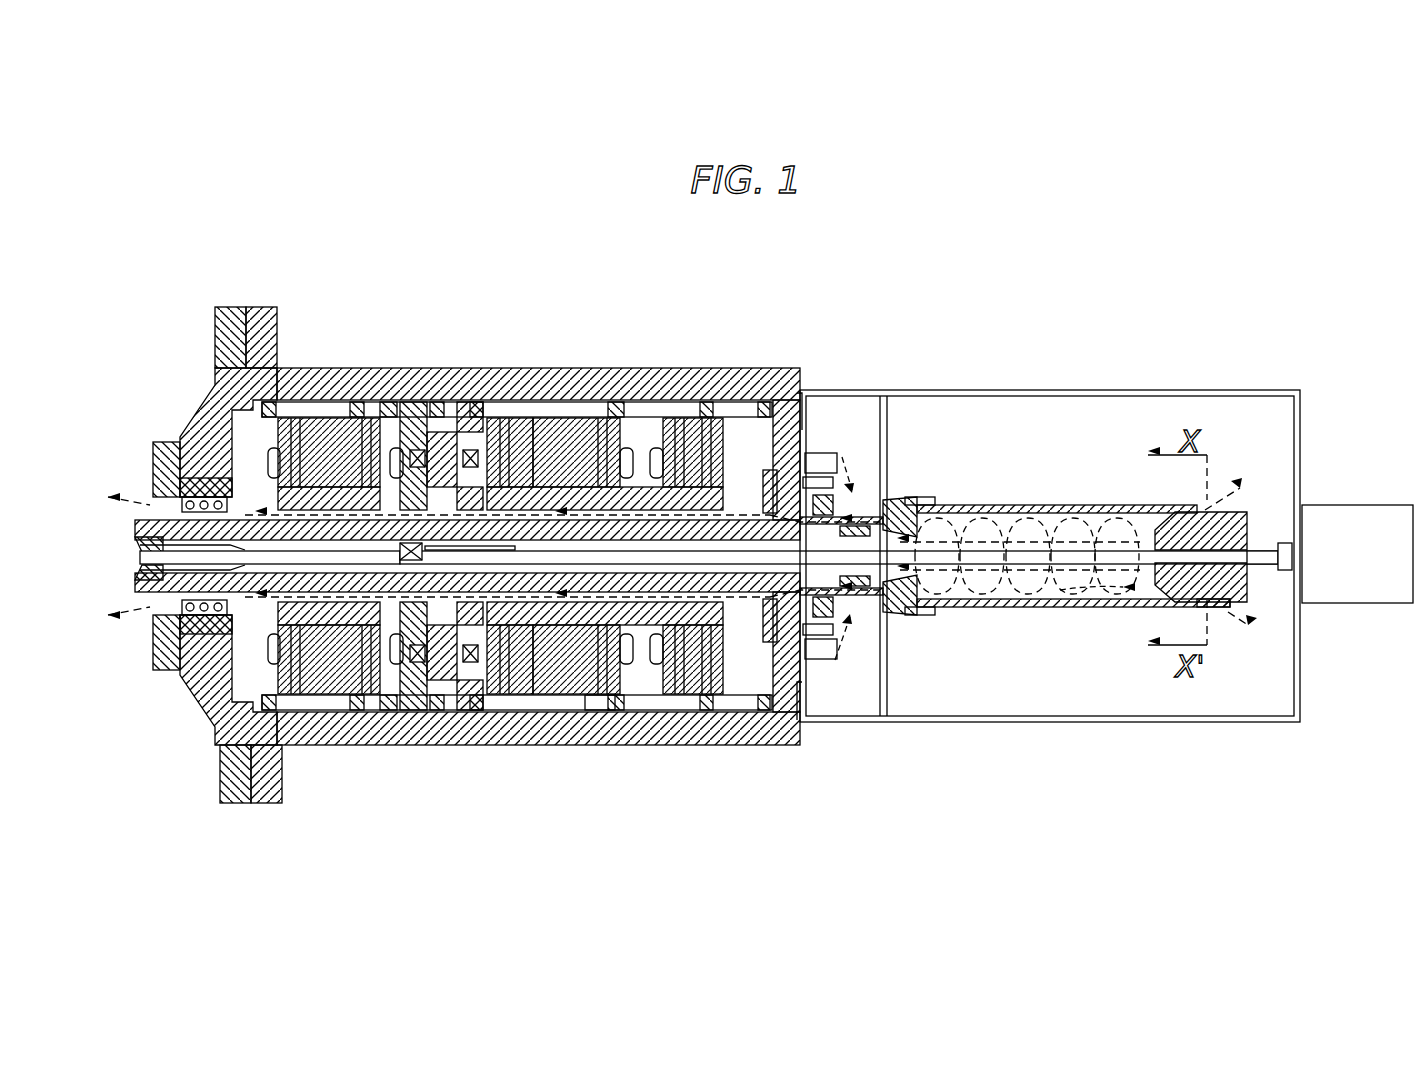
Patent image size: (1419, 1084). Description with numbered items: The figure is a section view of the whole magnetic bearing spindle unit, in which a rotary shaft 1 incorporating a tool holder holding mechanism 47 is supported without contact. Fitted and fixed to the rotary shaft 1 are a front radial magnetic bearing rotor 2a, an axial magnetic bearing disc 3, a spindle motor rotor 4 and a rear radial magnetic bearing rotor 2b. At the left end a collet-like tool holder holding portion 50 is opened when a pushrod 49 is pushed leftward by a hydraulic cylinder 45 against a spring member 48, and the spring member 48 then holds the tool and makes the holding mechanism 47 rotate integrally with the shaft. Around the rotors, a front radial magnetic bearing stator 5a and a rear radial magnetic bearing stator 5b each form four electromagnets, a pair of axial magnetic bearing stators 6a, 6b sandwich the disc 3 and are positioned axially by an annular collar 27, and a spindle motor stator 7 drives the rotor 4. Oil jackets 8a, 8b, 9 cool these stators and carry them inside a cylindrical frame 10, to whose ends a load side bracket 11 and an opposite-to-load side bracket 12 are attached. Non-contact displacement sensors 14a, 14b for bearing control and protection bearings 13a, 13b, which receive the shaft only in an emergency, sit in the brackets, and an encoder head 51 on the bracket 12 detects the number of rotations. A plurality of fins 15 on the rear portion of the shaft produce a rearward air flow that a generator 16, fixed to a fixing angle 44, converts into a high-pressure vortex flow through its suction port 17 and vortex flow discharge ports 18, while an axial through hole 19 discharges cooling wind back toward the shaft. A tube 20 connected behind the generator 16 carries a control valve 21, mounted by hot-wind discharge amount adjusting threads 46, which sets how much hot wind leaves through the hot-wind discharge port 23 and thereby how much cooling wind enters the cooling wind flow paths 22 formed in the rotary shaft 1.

The rotary shaft 1 is at (142, 527).
The front radial magnetic bearing rotor 2a is at (275, 490).
The rear radial magnetic bearing rotor 2b is at (733, 410).
The axial magnetic bearing disc 3 is at (437, 410).
The spindle motor rotor 4 is at (518, 410).
The front radial magnetic bearing stator 5a is at (333, 437).
The rear radial magnetic bearing stator 5b is at (690, 410).
The load side axial magnetic bearing stator 6a is at (413, 407).
The opposite-to-load side axial magnetic bearing stator 6b is at (465, 410).
The spindle motor stator 7 is at (557, 410).
The oil jacket for cooling the front radial magnetic bearing stator 8a is at (350, 710).
The oil jacket for cooling the rear radial magnetic bearing stator 8b is at (670, 710).
The oil jacket for cooling the spindle motor stator 9 is at (540, 700).
The cylindrical frame 10 is at (262, 307).
The load side bracket 11 is at (223, 336).
The opposite-to-load side bracket 12 is at (783, 380).
The protection bearing 13a is at (155, 653).
The protection bearing 13b is at (812, 620).
The non-contact displacement sensor 14a is at (153, 477).
The non-contact displacement sensor 14b is at (830, 453).
The fins 15 is at (886, 493).
The generator 16 is at (913, 614).
The high-speed air flow suction port 17 is at (887, 620).
The vortex flow discharge ports 18 is at (922, 495).
The axial through hole 19 is at (938, 612).
The tube 20 is at (1020, 508).
The control valve 21 is at (1247, 527).
The cooling wind flow paths 22 is at (596, 712).
The hot-wind discharge port 23 is at (1178, 593).
The annular collar 27 is at (430, 707).
The fixing angle 44 is at (1095, 722).
The hydraulic cylinder 45 is at (1360, 604).
The hot-wind discharge amount adjusting threads 46 is at (1225, 608).
The tool holder holding mechanism 47 is at (350, 557).
The spring member 48 is at (458, 703).
The pushrod 49 is at (495, 562).
The tool holder holding portion 50 is at (148, 567).
The encoder head 51 is at (857, 490).